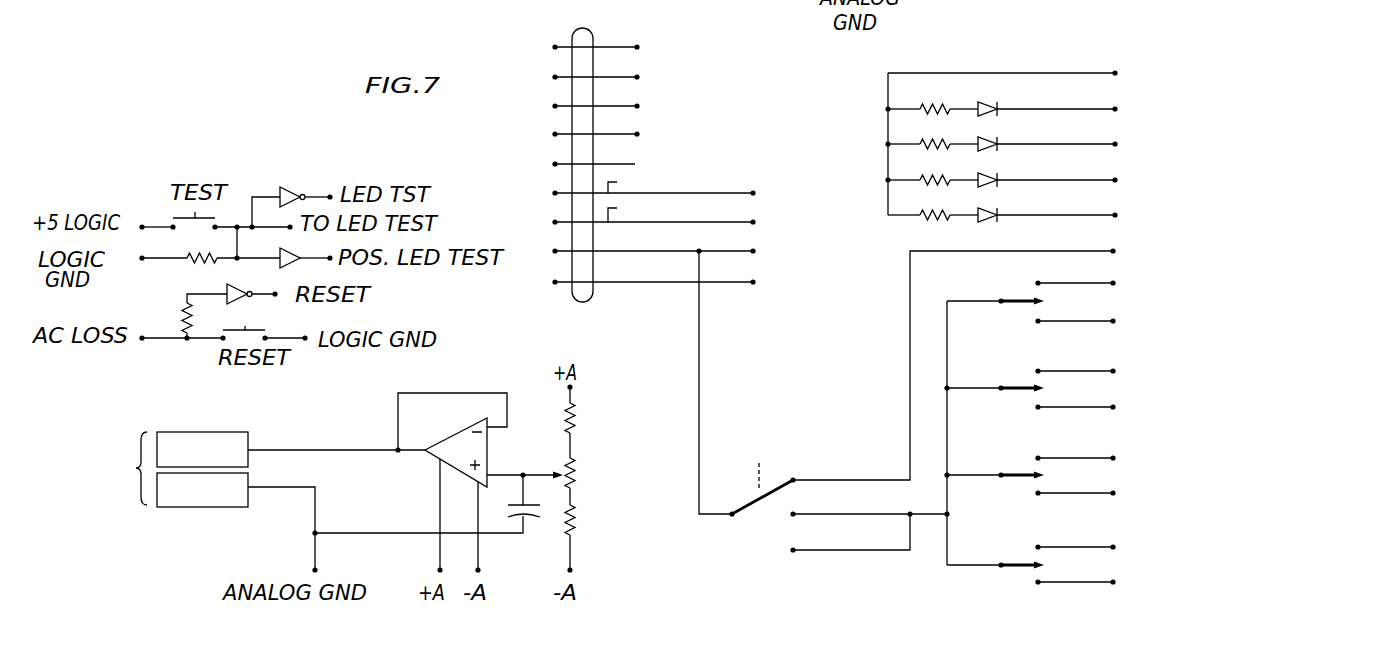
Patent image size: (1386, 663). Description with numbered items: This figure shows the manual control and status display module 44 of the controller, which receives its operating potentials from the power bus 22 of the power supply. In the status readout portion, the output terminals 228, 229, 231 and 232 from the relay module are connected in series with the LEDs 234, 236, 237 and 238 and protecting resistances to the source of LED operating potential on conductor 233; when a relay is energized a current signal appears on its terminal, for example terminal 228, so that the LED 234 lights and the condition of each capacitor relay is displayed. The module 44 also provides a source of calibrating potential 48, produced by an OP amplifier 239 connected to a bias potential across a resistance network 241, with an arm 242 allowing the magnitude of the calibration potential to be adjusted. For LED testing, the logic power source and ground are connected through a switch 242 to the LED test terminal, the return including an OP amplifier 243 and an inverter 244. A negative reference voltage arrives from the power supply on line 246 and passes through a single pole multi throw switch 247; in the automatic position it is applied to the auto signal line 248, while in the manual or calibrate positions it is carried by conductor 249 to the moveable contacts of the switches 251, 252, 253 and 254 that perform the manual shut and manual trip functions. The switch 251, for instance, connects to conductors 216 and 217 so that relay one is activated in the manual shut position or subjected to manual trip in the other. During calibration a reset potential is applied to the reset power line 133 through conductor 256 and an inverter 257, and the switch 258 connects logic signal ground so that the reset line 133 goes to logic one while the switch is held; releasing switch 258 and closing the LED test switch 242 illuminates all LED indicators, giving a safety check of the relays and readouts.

The power bus 22 is at (602, 151).
The manual control and status display module 44 is at (685, 164).
The source of calibrating potential 48 is at (177, 469).
The reset power line 133 is at (311, 310).
The conductor 216 is at (1187, 537).
The conductor 217 is at (1186, 574).
The output terminal 228 is at (1163, 208).
The output terminal 229 is at (1162, 172).
The output terminal 231 is at (1162, 136).
The output terminal 232 is at (1163, 100).
The conductor 233 is at (1115, 67).
The LED 234 is at (970, 205).
The LED 236 is at (967, 169).
The LED 237 is at (967, 133).
The LED 238 is at (965, 97).
The OP amplifier 239 is at (452, 440).
The resistance network 241 is at (600, 478).
The arm / LED test switch 242 is at (326, 329).
The OP amplifier 243 is at (240, 257).
The inverter 244 is at (292, 185).
The line 246 is at (727, 381).
The single pole multi throw switch 247 is at (754, 515).
The auto signal line 248 is at (1080, 359).
The conductor 249 is at (871, 454).
The switch 251 is at (995, 582).
The switch 252 is at (1142, 479).
The switch 253 is at (1142, 392).
The switch 254 is at (1143, 305).
The conductor 256 is at (156, 364).
The inverter 257 is at (235, 311).
The switch 258 is at (232, 353).